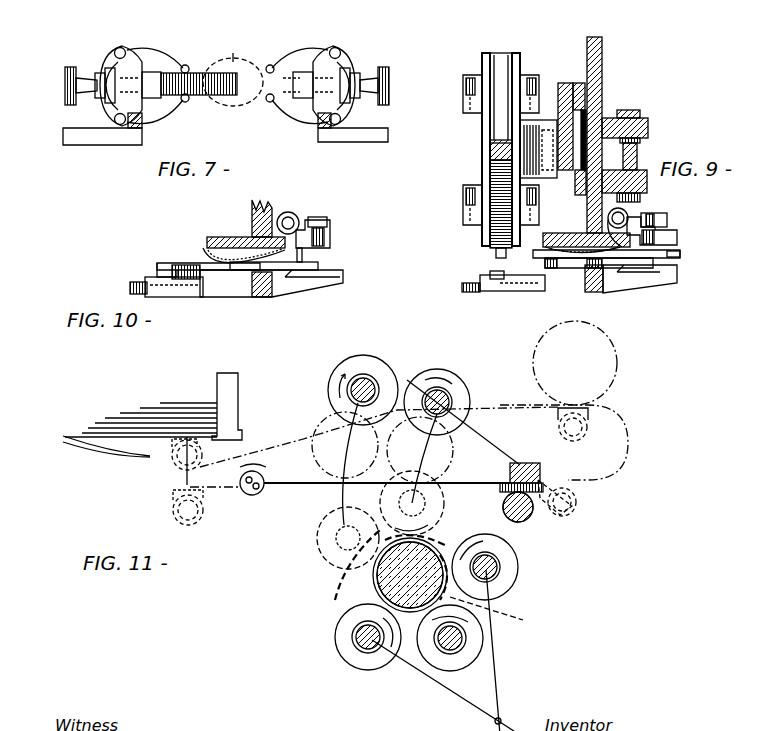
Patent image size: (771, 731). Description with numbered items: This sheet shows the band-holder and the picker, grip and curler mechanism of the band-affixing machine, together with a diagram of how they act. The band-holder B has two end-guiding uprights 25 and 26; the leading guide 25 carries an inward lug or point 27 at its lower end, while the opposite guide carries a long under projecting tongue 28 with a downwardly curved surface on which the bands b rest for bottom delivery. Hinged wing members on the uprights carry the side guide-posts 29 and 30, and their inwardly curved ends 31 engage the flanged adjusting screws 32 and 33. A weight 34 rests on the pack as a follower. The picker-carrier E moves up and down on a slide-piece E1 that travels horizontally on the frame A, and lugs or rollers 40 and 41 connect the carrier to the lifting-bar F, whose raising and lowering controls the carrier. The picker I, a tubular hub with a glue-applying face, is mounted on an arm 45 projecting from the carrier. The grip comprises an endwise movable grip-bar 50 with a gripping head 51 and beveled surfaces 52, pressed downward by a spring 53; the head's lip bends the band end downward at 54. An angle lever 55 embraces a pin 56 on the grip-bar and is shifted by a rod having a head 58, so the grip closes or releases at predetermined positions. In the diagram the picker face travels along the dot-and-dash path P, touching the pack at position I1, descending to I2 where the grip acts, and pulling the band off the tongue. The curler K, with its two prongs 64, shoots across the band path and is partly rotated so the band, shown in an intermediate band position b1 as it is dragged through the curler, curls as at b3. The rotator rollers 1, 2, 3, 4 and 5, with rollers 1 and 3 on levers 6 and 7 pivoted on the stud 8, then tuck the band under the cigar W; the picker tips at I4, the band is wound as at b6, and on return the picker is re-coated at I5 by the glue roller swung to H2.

In FIG. 11, the rotator roller 1 is at (350, 660).
In FIG. 11, the rotator roller 2 is at (462, 668).
In FIG. 11, the rotator roller 3 is at (514, 578).
In FIG. 11, the rotator roller 4 is at (440, 372).
In FIG. 11, the rotator roller 5 is at (366, 358).
In FIG. 11, the lever 6 is at (446, 692).
In FIG. 11, the lever 7 is at (500, 688).
In FIG. 11, the fulcrum or stud 8 is at (490, 724).
In FIG. 7, the end-guiding upright 25 is at (303, 72).
In FIG. 9, the end-guiding upright 25 is at (501, 62).
In FIG. 11, the end-guiding upright 25 is at (227, 398).
In FIG. 7, the end-guiding upright 26 is at (150, 72).
In FIG. 9, the inward lug or point 27 is at (494, 258).
In FIG. 11, the inward lug or point 27 is at (236, 434).
In FIG. 7, the under projecting tongue 28 is at (224, 95).
In FIG. 11, the under projecting tongue 28 is at (106, 455).
In FIG. 7, the side guide-post 29 is at (186, 65).
In FIG. 9, the side guide-post 29 is at (486, 70).
In FIG. 7, the side guide-post 30 is at (186, 102).
In FIG. 9, the side guide-post 30 is at (516, 68).
In FIG. 7, the inwardly curved ends 31 is at (108, 68).
In FIG. 7, the flanged adjusting screw 32 is at (389, 85).
In FIG. 7, the flanged adjusting screw 33 is at (65, 86).
In FIG. 9, the weight 34 is at (490, 148).
In FIG. 9, the lug or roller 40 is at (640, 117).
In FIG. 9, the lug or roller 41 is at (648, 186).
In FIG. 9, the arm 45 is at (459, 296).
In FIG. 10, the arm 45 is at (203, 292).
In FIG. 9, the grip-bar 50 is at (681, 254).
In FIG. 10, the grip-bar 50 is at (360, 261).
In FIG. 9, the gripping head 51 is at (545, 264).
In FIG. 10, the gripping head 51 is at (164, 263).
In FIG. 11, the gripping head 51 is at (524, 463).
In FIG. 9, the beveled surfaces 52 is at (660, 270).
In FIG. 10, the beveled surfaces 52 is at (213, 277).
In FIG. 9, the spring 53 is at (576, 240).
In FIG. 10, the spring 53 is at (203, 252).
In FIG. 11, the bent-down end of band 54 is at (542, 483).
In FIG. 9, the angle lever 55 is at (678, 236).
In FIG. 10, the angle lever 55 is at (306, 220).
In FIG. 9, the pin or lug 56 is at (668, 219).
In FIG. 10, the pin or lug 56 is at (361, 241).
In FIG. 9, the head 58 is at (630, 214).
In FIG. 10, the head 58 is at (289, 212).
In FIG. 11, the prongs 64 is at (247, 484).
In FIG. 9, the frame A is at (546, 121).
In FIG. 7, the band-holder B is at (102, 138).
In FIG. 9, the band-holder B is at (447, 180).
In FIG. 11, the band-holder B is at (217, 390).
In FIG. 9, the picker-carrier E is at (602, 92).
In FIG. 10, the picker-carrier E is at (257, 296).
In FIG. 9, the slide-piece E1 is at (568, 144).
In FIG. 9, the lifting-bar F is at (637, 157).
In FIG. 9, the picker I is at (512, 294).
In FIG. 10, the picker I is at (143, 280).
In FIG. 11, the picker I is at (509, 507).
In FIG. 11, the picker position I1 is at (177, 461).
In FIG. 11, the picker position I2 is at (173, 505).
In FIG. 11, the picker position I4 is at (572, 507).
In FIG. 11, the picker position I5 is at (581, 424).
In FIG. 11, the curler K is at (253, 494).
In FIG. 11, the path of picker face P is at (630, 447).
In FIG. 11, the position of glue-transferring roller H2 is at (575, 363).
In FIG. 11, the cigar W is at (410, 575).
In FIG. 7, the band b is at (233, 69).
In FIG. 9, the band b is at (492, 228).
In FIG. 10, the band b is at (153, 277).
In FIG. 11, the band b is at (150, 438).
In FIG. 11, the sheet path b1 is at (425, 564).
In FIG. 11, the curled band position b3 is at (352, 580).
In FIG. 11, the wound band b6 is at (496, 615).